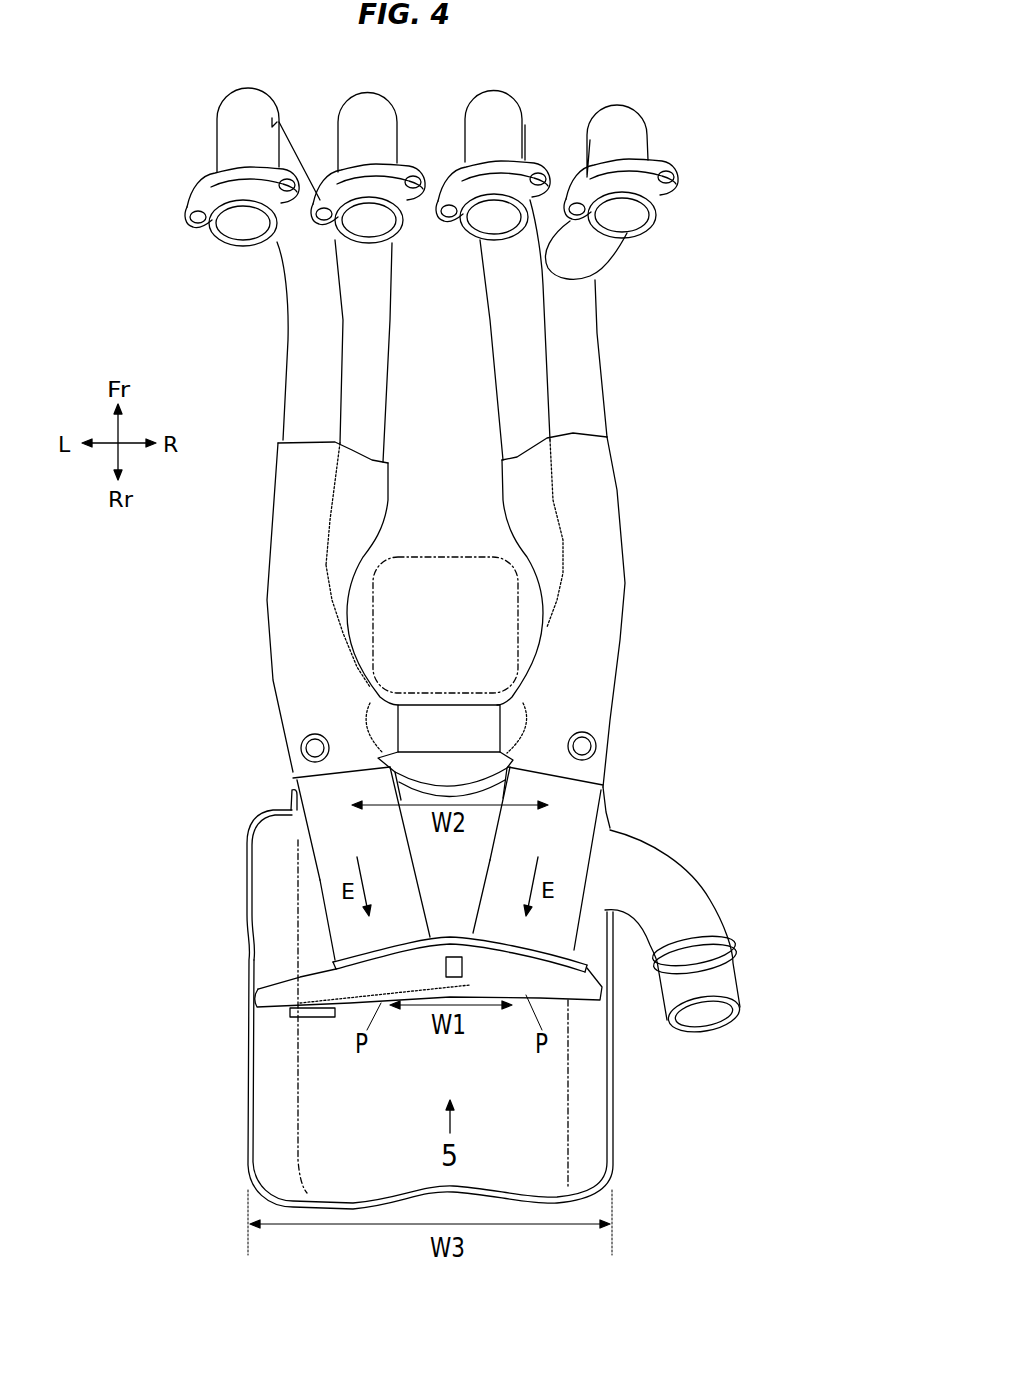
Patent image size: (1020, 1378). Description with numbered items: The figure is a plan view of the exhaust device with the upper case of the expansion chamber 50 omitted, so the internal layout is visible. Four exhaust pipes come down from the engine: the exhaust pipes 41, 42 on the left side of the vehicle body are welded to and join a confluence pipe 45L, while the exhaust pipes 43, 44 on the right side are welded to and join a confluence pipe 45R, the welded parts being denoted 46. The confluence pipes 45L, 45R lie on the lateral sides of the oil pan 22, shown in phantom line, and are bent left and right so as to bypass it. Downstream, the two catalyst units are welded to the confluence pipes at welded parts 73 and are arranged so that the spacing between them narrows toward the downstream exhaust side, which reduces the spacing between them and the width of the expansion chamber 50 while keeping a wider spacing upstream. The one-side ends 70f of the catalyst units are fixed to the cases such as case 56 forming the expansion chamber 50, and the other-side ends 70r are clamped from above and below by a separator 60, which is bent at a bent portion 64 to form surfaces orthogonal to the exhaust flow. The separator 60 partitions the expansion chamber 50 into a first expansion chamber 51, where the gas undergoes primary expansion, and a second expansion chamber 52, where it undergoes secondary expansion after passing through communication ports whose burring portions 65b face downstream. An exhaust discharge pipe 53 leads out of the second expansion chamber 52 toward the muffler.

The exhaust pipe 41 is at (207, 115).
The exhaust pipe 42 is at (350, 110).
The exhaust pipe 43 is at (480, 105).
The exhaust pipe 44 is at (607, 128).
The welded part 46 is at (315, 437).
The confluence pipe 45L is at (267, 590).
The confluence pipe 45R is at (618, 580).
The oil pan 22 is at (447, 557).
The welded part 73 is at (297, 776).
The one-side end 70f is at (292, 794).
The other-side end 70r is at (345, 945).
The burring portion 65b is at (333, 963).
The bent portion 64 is at (454, 975).
The separator 60 is at (250, 1002).
The exhaust discharge pipe 53 is at (725, 975).
The expansion chamber 50 is at (236, 1062).
The second expansion chamber 52 is at (268, 895).
The first expansion chamber 51 is at (270, 1106).
The case 56 is at (245, 1160).